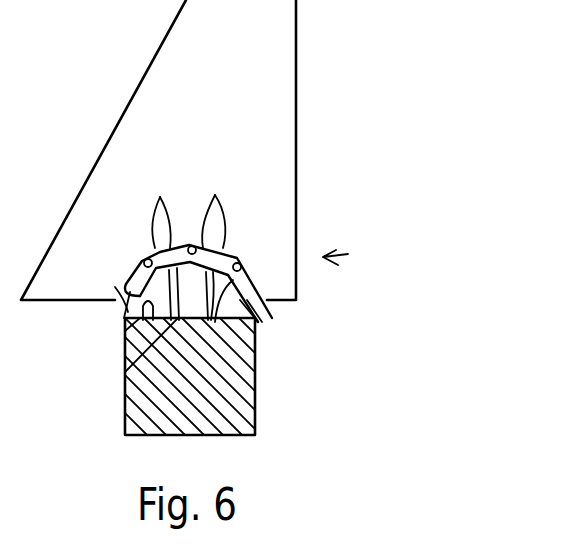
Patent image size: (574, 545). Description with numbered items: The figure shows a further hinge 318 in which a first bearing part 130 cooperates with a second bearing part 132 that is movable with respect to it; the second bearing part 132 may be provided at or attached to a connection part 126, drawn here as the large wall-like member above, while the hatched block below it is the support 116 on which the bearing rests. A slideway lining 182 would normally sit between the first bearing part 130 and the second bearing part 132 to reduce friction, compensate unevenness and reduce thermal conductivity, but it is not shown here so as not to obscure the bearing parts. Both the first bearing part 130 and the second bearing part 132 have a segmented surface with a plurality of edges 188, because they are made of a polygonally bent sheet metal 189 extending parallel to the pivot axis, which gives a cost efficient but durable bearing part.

The carrier block 116 is at (253, 413).
The connection part 126 is at (283, 148).
The first bearing part 130 is at (247, 300).
The second bearing part 132 is at (120, 290).
The slideway lining 182 is at (240, 268).
The edges 188 is at (319, 230).
The polygonally bent sheet metal 189 is at (128, 272).
The hinge 318 is at (367, 256).